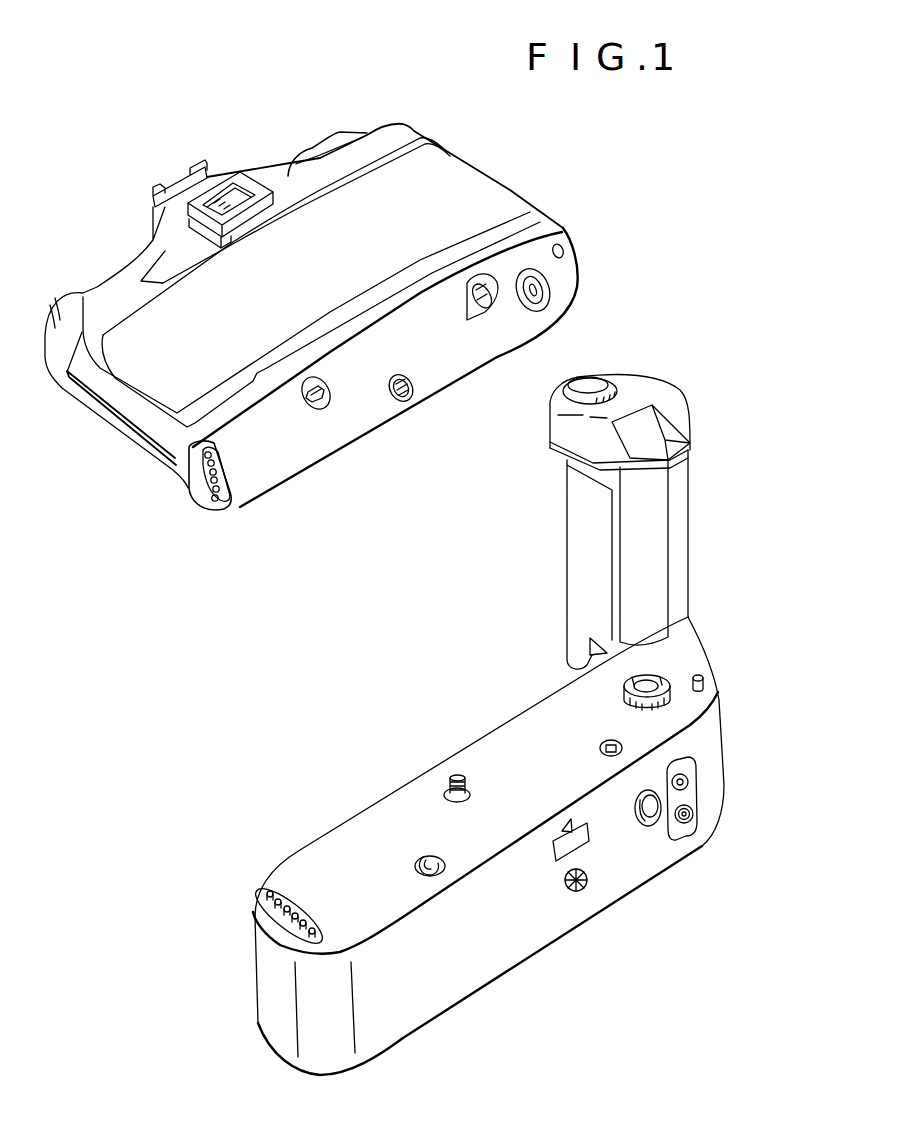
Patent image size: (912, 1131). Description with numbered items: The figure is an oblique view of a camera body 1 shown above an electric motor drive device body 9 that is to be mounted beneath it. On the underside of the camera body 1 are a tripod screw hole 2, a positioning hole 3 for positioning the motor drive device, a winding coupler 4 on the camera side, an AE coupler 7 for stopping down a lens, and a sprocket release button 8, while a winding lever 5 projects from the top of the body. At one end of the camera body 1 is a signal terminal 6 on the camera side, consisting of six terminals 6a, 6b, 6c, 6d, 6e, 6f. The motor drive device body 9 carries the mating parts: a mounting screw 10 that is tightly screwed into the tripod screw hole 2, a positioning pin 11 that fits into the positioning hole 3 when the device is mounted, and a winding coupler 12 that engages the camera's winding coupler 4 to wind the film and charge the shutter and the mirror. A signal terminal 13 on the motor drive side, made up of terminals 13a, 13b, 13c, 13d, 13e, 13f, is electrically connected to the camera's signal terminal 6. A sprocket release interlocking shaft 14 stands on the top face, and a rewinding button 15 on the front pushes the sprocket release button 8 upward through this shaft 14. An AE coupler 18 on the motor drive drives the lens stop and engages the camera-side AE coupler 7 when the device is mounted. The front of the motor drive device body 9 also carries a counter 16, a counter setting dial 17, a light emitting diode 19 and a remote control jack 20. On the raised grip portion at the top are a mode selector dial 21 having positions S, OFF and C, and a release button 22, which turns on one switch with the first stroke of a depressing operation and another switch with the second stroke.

The camera body 1 is at (505, 181).
The tripod screw hole 2 is at (403, 402).
The positioning hole 3 is at (564, 249).
The winding coupler 4 is at (550, 294).
The winding lever 5 is at (315, 151).
The signal terminal 6 is at (228, 485).
The terminal 6a is at (215, 502).
The terminal 6b is at (213, 492).
The terminal 6c is at (211, 482).
The terminal 6d is at (210, 473).
The terminal 6e is at (208, 464).
The terminal 6f is at (205, 455).
The AE coupler 7 is at (318, 410).
The sprocket release button 8 is at (493, 308).
The electric motor drive device body 9 is at (725, 751).
The mounting screw 10 is at (458, 778).
The positioning pin 11 is at (704, 678).
The winding coupler 12 is at (656, 680).
The signal terminal 13 is at (300, 903).
The terminal 13a is at (270, 891).
The terminal 13b is at (276, 902).
The terminal 13c is at (285, 911).
The terminal 13d is at (293, 919).
The terminal 13e is at (301, 926).
The terminal 13f is at (310, 935).
The sprocket release interlocking shaft 14 is at (604, 745).
The rewinding button 15 is at (649, 827).
The counter 16 is at (557, 862).
The counter setting dial 17 is at (580, 891).
The AE coupler 18 is at (425, 859).
The light emitting diode 19 is at (688, 782).
The remote control jack 20 is at (693, 813).
The mode selector dial 21 is at (620, 387).
The release button 22 is at (592, 384).